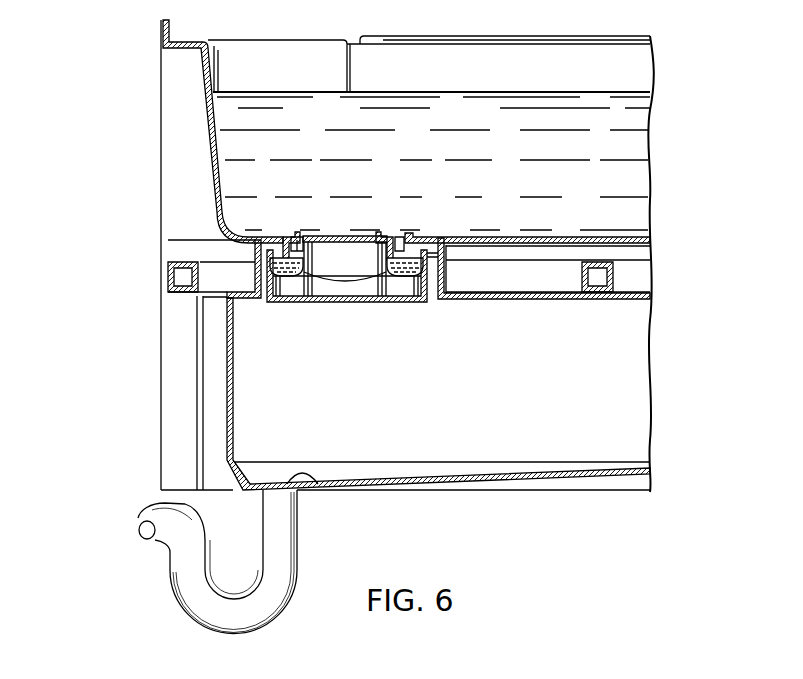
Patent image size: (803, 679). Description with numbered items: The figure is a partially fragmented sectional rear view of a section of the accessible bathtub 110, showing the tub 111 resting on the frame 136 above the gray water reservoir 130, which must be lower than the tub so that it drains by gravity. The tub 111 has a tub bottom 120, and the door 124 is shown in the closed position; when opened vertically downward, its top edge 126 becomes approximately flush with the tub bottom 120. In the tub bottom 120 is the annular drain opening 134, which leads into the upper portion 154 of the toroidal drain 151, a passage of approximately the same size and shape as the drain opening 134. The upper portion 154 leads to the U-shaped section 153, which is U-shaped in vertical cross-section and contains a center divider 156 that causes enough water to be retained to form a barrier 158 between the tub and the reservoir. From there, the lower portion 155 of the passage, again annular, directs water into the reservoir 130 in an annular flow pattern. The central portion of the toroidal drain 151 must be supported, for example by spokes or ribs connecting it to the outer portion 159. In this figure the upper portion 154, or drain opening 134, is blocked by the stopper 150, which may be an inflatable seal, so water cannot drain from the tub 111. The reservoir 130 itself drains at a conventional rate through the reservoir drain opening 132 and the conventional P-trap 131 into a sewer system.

The accessible bathtub 110 is at (128, 63).
The tub 111 is at (208, 148).
The tub bottom 120 is at (488, 236).
The door 124 is at (447, 60).
The top edge 126 is at (521, 40).
The gray water reservoir 130 is at (507, 440).
The P-trap 131 is at (143, 510).
The reservoir drain opening 132 is at (319, 486).
The drain opening 134 is at (297, 234).
The frame 136 is at (184, 330).
The stopper 150 is at (373, 256).
The toroidal drain 151 is at (373, 299).
The U-shaped section 153 is at (312, 270).
The upper portion 154 is at (372, 256).
The lower portion 155 is at (275, 274).
The center divider 156 is at (408, 250).
The barrier 158 is at (294, 252).
The outer portion 159 is at (440, 268).